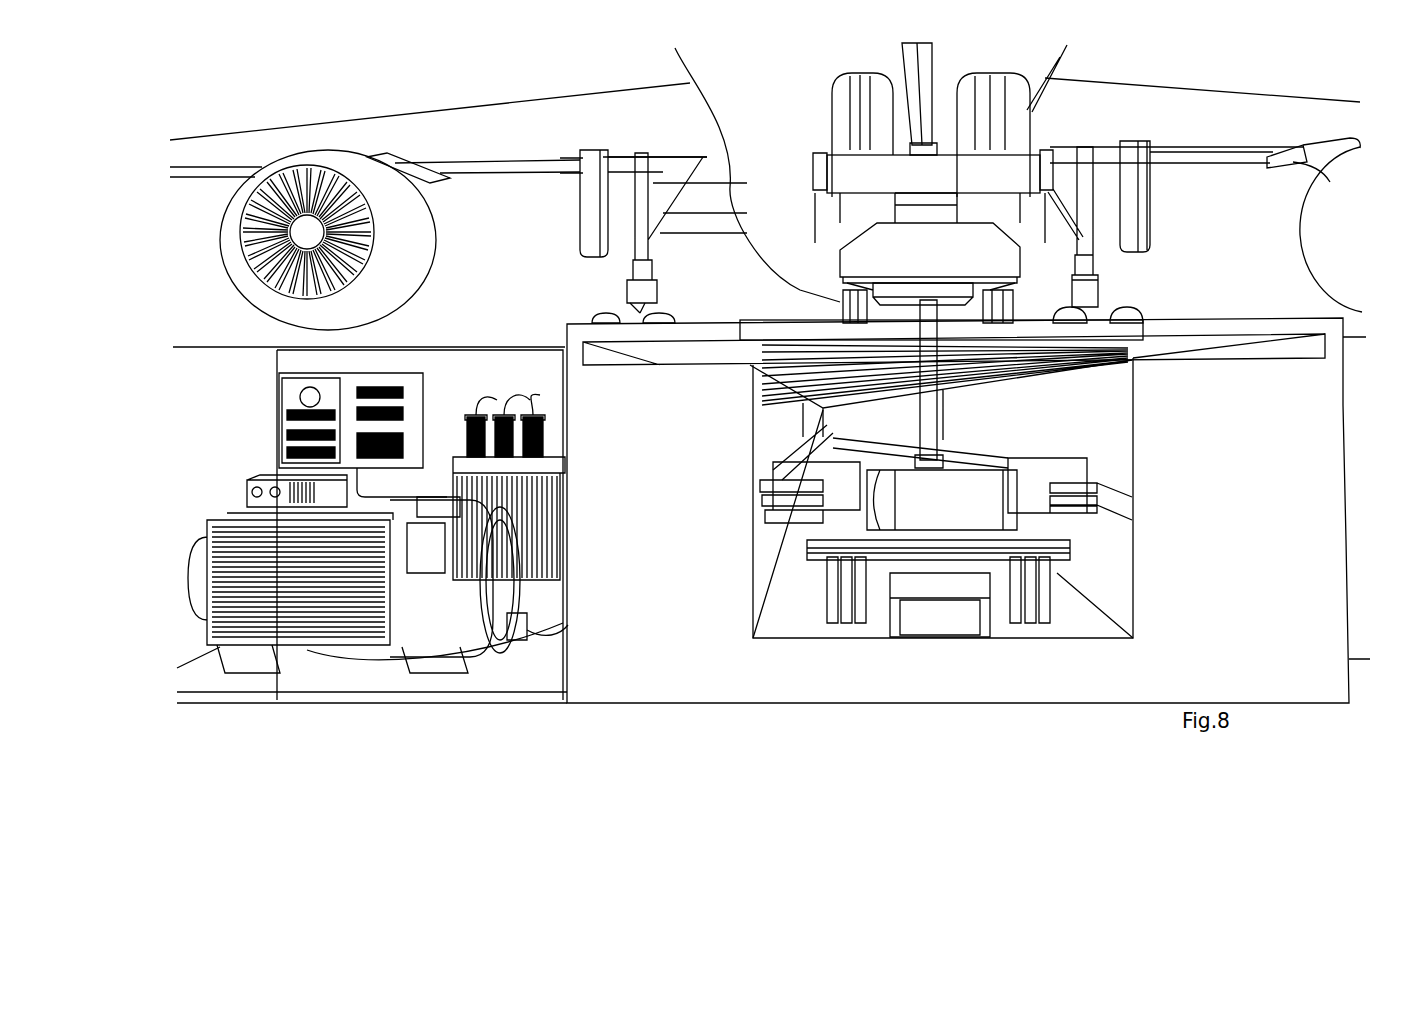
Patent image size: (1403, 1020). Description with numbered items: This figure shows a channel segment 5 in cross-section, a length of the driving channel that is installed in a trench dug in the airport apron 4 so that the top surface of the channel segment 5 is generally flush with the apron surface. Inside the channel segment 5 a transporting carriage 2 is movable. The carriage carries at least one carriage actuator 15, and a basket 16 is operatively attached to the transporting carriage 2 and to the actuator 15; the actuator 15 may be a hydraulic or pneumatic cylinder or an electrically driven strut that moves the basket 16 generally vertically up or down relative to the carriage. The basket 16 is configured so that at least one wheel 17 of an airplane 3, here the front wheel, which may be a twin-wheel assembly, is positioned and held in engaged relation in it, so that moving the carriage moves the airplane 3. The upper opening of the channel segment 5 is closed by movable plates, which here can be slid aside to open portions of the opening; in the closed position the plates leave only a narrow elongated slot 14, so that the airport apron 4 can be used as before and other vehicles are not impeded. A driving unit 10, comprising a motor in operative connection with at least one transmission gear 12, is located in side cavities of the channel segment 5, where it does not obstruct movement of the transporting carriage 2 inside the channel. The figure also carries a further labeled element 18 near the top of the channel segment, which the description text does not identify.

The transporting carriage 2 is at (865, 520).
The airplane 3 is at (995, 62).
The airport apron 4 is at (513, 345).
The channel segment 5 is at (760, 405).
The driving unit 10 is at (288, 610).
The transmission gear 12 is at (947, 615).
The elongated slot 14 is at (850, 287).
The carriage actuator 15 is at (930, 410).
The basket 16 is at (997, 257).
The wheel 17 is at (977, 170).
The platform 18 is at (787, 322).